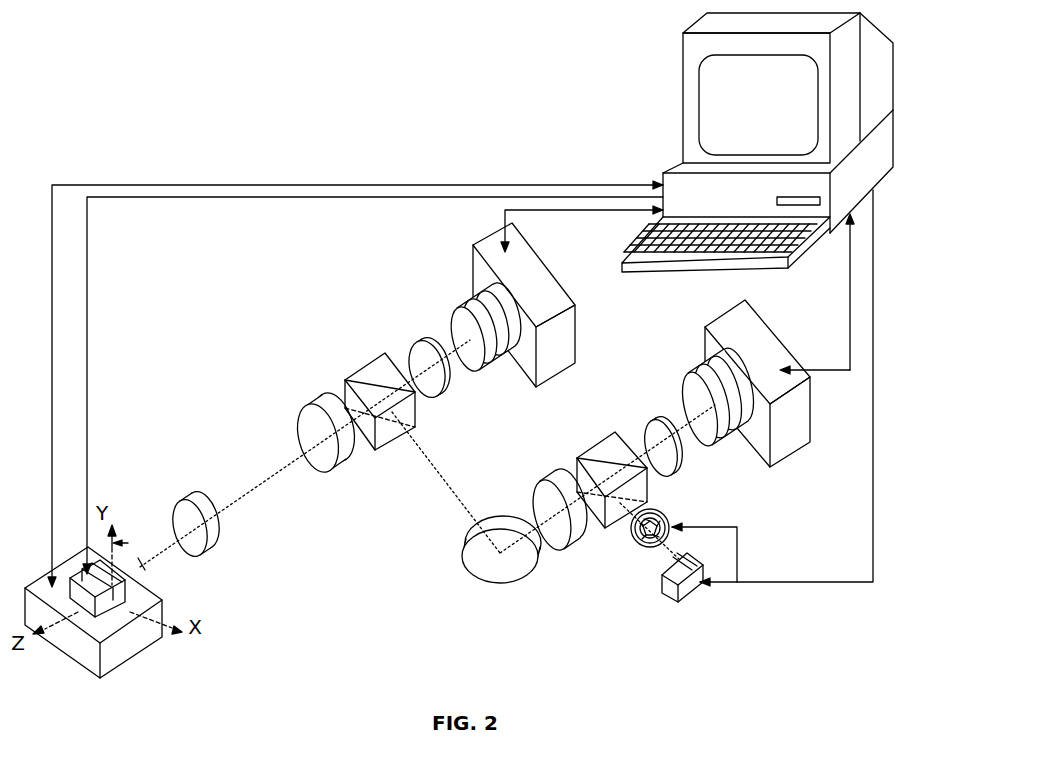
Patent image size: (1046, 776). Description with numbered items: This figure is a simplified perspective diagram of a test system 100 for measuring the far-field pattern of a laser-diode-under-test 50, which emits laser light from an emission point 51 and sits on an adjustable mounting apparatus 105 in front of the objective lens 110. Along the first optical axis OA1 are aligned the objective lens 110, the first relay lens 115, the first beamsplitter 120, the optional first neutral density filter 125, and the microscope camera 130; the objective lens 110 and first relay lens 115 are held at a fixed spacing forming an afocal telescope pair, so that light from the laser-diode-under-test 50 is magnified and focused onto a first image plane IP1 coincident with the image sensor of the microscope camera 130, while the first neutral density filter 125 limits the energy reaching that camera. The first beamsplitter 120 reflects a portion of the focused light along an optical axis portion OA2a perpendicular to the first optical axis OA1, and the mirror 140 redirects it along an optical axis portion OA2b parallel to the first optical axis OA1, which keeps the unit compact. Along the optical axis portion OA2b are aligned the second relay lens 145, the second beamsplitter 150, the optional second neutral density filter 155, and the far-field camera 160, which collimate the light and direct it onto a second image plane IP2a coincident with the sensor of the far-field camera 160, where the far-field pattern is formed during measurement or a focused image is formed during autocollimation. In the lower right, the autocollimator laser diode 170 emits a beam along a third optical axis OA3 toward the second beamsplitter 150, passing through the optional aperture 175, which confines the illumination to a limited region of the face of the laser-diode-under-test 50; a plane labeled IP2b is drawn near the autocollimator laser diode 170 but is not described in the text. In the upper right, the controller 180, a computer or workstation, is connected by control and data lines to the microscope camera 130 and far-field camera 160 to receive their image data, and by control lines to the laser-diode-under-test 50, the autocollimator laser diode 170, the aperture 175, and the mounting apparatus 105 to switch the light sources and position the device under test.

The test system 100 is at (490, 108).
The laser-diode-under-test (LDUT) 50 is at (88, 607).
The emission point 51 is at (110, 590).
The adjustable mounting apparatus 105 is at (123, 650).
The objective lens 110 is at (175, 510).
The first relay lens 115 is at (308, 410).
The first beamsplitter 120 is at (360, 368).
The first neutral density (ND) filter 125 is at (413, 343).
The microscope camera 130 is at (472, 275).
The first image plane IP1 is at (452, 327).
The mirror 140 is at (485, 580).
The second relay lens 145 is at (547, 482).
The second beamsplitter 150 is at (597, 447).
The second neutral density (ND) filter 155 is at (653, 420).
The far-field camera 160 is at (703, 360).
The second image plane IP2a is at (692, 407).
The autocollimator laser diode 170 is at (672, 590).
The second image plane b IP2b is at (673, 563).
The aperture 175 is at (657, 510).
The controller 180 is at (682, 112).
The first optical axis OA1 is at (253, 490).
The optical axis portion OA2a is at (452, 497).
The optical axis portion OA2b is at (540, 530).
The third optical axis OA3 is at (668, 548).